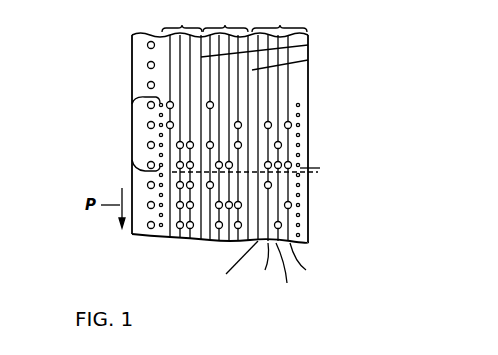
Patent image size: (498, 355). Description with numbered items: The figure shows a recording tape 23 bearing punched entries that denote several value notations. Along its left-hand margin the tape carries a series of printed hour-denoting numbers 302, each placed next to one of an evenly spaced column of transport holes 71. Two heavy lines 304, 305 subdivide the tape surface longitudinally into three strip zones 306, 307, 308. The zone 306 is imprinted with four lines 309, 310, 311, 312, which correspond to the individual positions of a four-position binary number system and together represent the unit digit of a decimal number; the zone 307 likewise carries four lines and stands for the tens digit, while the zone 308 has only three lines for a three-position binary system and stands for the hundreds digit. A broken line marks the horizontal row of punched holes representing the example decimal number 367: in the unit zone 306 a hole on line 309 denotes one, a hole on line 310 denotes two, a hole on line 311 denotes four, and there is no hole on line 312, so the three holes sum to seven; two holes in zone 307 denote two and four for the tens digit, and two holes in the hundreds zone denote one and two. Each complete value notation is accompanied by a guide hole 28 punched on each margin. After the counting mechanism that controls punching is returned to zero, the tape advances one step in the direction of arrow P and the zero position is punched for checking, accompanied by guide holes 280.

The recording tape 23 is at (132, 85).
The guide hole 28 is at (132, 104).
The transport holes 71 is at (132, 172).
The guide holes 280 is at (132, 178).
The hour-denoting numbers 302 is at (132, 44).
The heavy line 304 is at (269, 47).
The heavy line 305 is at (294, 61).
The strip zone 306 is at (279, 22).
The strip zone 307 is at (225, 22).
The strip zone 308 is at (182, 22).
The line 309 is at (310, 267).
The line 310 is at (288, 274).
The line 311 is at (264, 264).
The line 312 is at (232, 267).
The decimal number notation 367 is at (322, 169).